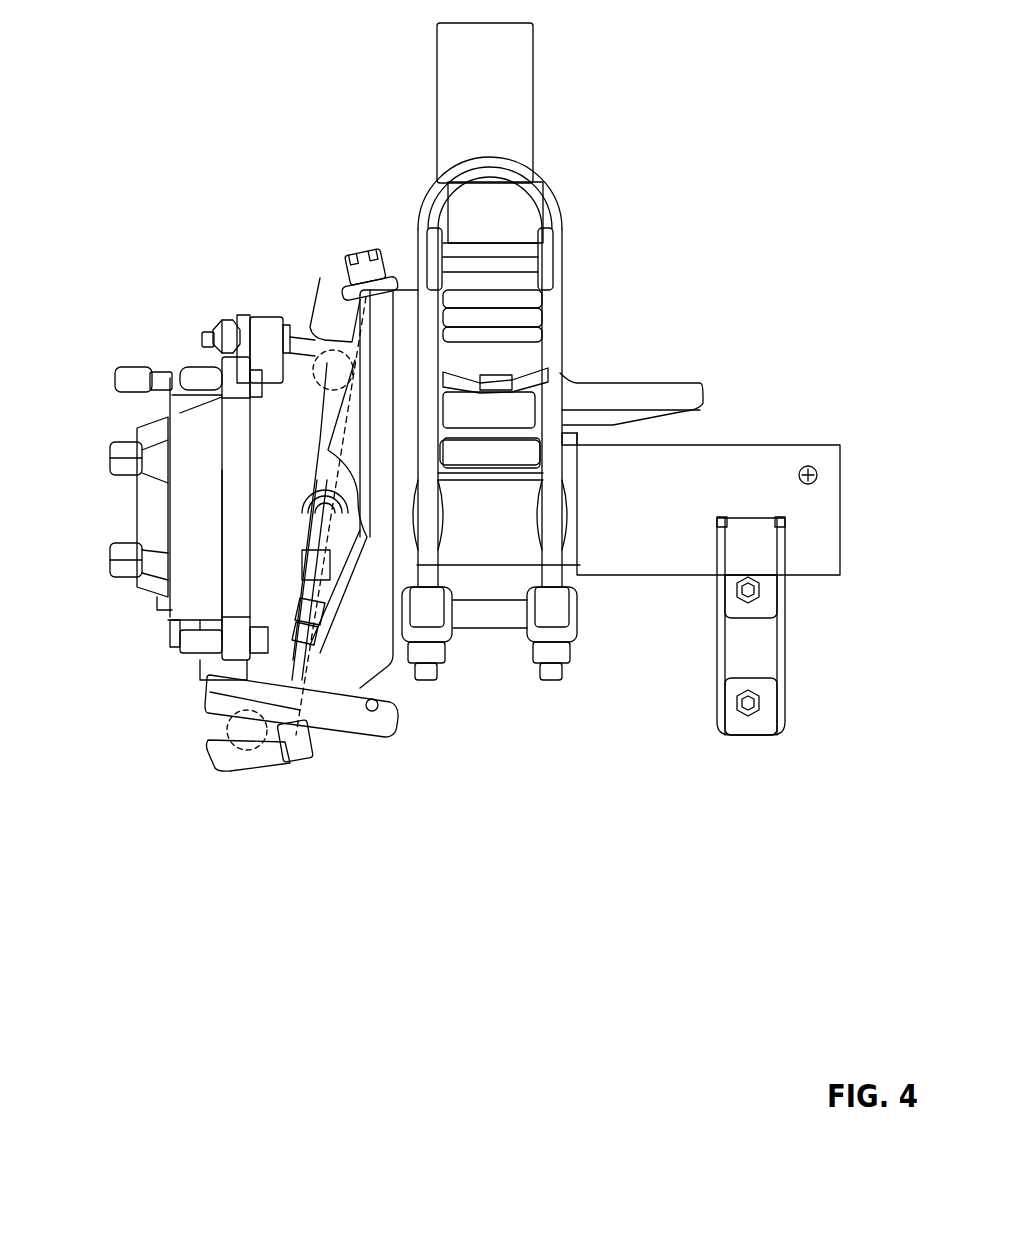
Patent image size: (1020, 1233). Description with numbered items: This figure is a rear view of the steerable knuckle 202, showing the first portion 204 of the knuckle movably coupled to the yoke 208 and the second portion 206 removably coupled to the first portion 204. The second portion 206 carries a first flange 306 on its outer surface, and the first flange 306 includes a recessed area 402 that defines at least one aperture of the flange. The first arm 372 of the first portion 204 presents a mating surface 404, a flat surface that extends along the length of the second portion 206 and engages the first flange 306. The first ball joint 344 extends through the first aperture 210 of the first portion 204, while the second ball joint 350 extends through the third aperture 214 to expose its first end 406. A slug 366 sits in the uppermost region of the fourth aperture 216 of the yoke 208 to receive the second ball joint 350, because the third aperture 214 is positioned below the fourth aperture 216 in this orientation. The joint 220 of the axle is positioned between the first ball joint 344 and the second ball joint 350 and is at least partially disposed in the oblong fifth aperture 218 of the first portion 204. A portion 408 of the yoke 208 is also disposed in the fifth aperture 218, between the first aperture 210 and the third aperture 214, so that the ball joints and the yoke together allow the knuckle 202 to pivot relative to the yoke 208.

The steerable knuckle 202 is at (436, 428).
The first portion 204 is at (305, 345).
The second portion 206 is at (138, 428).
The yoke 208 is at (395, 676).
The first aperture 210 is at (297, 766).
The third aperture 214 is at (357, 410).
The fourth aperture 216 is at (395, 271).
The fifth aperture 218 is at (312, 627).
The joint 220 is at (307, 612).
The first flange 306 is at (222, 567).
The first ball joint 344 is at (313, 723).
The second ball joint 350 is at (313, 330).
The slug 366 is at (383, 288).
The first arm 372 is at (303, 513).
The recessed area 402 is at (225, 312).
The mating surface 404 is at (250, 455).
The first end 406 is at (353, 397).
The portion of the yoke 408 is at (290, 660).